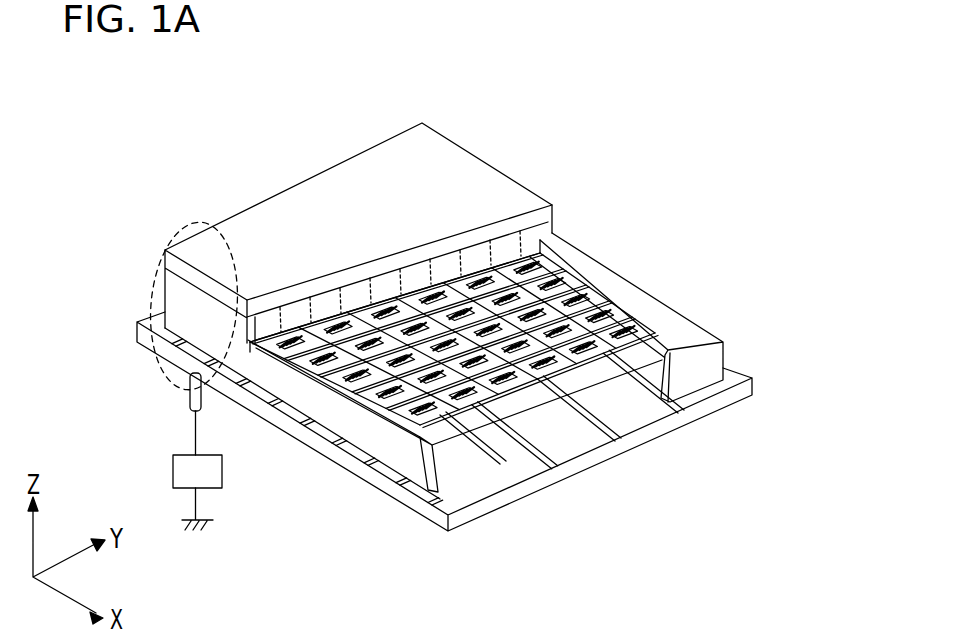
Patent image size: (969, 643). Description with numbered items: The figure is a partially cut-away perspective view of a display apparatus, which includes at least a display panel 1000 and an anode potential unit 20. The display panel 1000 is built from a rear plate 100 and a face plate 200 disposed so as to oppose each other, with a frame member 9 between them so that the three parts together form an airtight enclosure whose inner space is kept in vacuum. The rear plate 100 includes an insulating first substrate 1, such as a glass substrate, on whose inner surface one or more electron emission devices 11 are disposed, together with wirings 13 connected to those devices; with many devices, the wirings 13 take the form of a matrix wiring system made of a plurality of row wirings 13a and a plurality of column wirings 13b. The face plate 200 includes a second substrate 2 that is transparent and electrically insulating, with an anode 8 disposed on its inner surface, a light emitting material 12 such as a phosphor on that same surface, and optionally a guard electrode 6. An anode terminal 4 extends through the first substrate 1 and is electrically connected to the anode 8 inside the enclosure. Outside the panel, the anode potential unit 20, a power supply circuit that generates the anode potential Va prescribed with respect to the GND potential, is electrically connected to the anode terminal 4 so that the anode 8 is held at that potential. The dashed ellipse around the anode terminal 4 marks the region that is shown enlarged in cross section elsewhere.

The first substrate 1 is at (700, 407).
The second substrate 2 is at (436, 250).
The anode terminal 4 is at (195, 394).
The guard electrode 6 is at (525, 235).
The anode 8 is at (337, 300).
The frame member 9 is at (687, 327).
The electron emission device 11 is at (590, 393).
The light emitting material 12 is at (392, 286).
The wirings 13 is at (617, 511).
The row wirings 13a is at (520, 450).
The column wirings 13b is at (468, 440).
The anode potential unit 20 is at (174, 470).
The rear plate 100 is at (750, 528).
The face plate 200 is at (407, 33).
The display panel 1000 is at (373, 492).